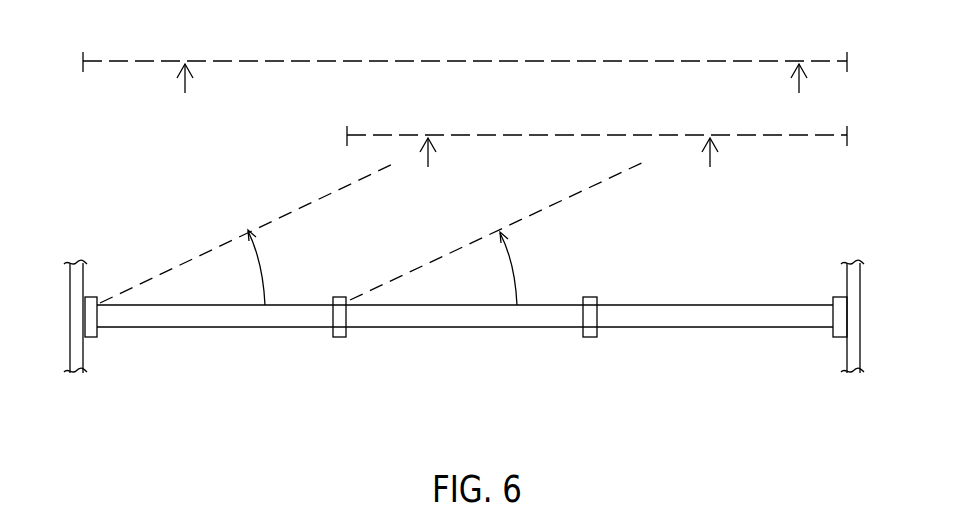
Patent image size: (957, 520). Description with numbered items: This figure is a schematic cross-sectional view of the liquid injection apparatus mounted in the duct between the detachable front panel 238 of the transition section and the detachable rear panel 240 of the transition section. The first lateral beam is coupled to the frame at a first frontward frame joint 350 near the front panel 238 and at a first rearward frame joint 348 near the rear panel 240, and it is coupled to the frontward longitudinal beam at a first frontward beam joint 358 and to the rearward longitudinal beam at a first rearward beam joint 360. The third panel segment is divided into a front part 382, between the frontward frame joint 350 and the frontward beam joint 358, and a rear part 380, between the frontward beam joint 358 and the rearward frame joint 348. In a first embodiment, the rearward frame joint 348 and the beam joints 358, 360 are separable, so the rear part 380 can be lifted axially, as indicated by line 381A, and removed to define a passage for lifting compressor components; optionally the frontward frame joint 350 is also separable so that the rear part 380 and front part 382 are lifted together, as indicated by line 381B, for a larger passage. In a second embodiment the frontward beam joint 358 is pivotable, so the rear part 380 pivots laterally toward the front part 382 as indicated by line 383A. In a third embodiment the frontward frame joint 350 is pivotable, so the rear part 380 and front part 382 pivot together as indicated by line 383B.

The detachable front panel 238 is at (70, 302).
The detachable rear panel 240 is at (860, 331).
The first rearward frame joint 348 is at (839, 297).
The first frontward frame joint 350 is at (88, 297).
The first frontward beam joint 358 is at (339, 297).
The first rearward beam joint 360 is at (591, 297).
The rear part of third panel segment 380 is at (672, 345).
The line indicating axial displacement of rear part 381A is at (553, 135).
The line indicating axial displacement of rear and front parts together 381B is at (449, 61).
The front part of third panel segment 382 is at (215, 350).
The line indicating lateral pivoting of rear part 383A is at (525, 215).
The line indicating lateral pivoting of rear and front parts together 383B is at (275, 220).